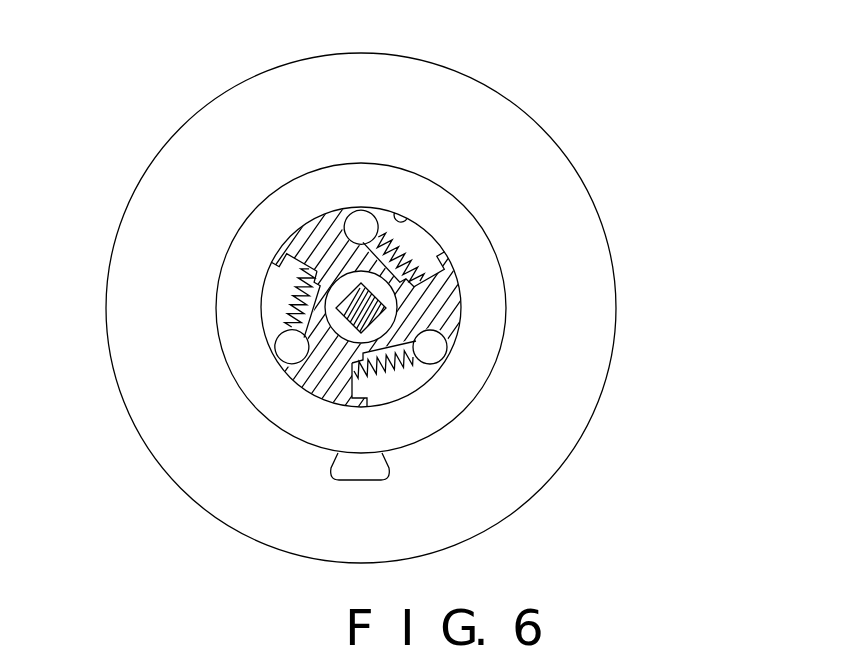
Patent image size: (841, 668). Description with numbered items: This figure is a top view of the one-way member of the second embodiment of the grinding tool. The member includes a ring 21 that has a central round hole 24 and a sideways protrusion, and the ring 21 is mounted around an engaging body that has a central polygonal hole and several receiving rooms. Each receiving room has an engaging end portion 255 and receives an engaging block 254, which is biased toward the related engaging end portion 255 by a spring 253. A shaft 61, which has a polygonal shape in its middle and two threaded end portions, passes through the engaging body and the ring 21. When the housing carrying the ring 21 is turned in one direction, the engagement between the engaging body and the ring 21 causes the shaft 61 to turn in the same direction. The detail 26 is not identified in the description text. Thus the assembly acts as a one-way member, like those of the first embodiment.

The ring 21 is at (448, 212).
The central round hole 24 is at (404, 222).
The spring 26 is at (427, 243).
The shaft 61 is at (340, 293).
The spring 253 is at (272, 318).
The engaging block 254 is at (293, 357).
The engaging end portion 255 is at (342, 225).